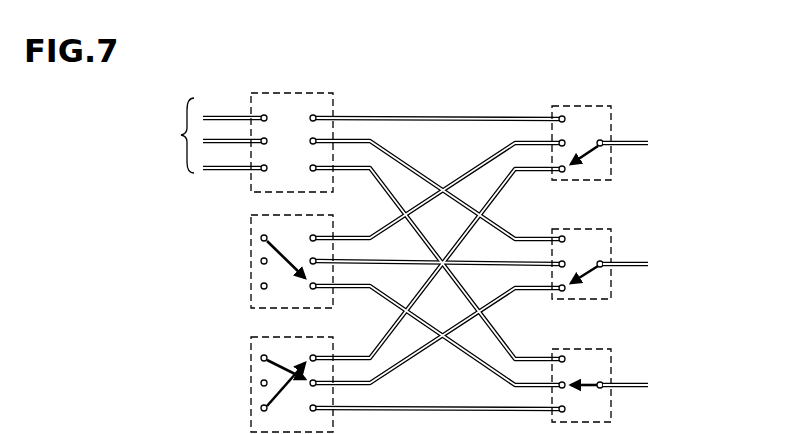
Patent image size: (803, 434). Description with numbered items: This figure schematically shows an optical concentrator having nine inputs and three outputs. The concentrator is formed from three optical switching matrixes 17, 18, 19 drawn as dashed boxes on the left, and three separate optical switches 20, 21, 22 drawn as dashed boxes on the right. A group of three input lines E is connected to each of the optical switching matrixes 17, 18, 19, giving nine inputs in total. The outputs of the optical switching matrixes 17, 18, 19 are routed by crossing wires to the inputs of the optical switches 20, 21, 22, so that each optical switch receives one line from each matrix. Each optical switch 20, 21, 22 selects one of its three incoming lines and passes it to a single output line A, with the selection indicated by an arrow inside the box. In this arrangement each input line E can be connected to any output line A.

The optical switching matrix 17 is at (260, 92).
The optical switching matrix 18 is at (252, 223).
The optical switching matrix 19 is at (252, 345).
The optical switch 20 is at (611, 121).
The optical switch 21 is at (650, 226).
The optical switch 22 is at (657, 352).
The input line E is at (206, 135).
The output line A is at (637, 146).